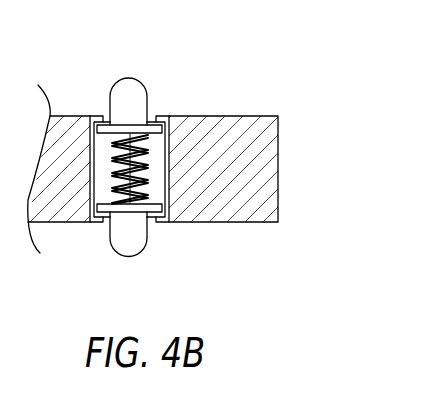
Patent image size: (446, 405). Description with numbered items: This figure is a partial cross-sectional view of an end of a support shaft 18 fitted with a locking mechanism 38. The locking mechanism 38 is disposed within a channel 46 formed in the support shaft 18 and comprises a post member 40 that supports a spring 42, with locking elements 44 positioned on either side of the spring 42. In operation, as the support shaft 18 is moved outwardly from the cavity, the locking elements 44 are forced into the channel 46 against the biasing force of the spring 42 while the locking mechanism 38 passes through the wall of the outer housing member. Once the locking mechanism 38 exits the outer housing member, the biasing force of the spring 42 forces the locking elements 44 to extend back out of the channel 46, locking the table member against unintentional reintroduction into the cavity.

The support shaft 18 is at (258, 142).
The locking mechanism 38 is at (139, 156).
The post member 40 is at (147, 160).
The spring 42 is at (108, 186).
The locking elements 44 is at (127, 90).
The channel 46 is at (152, 182).